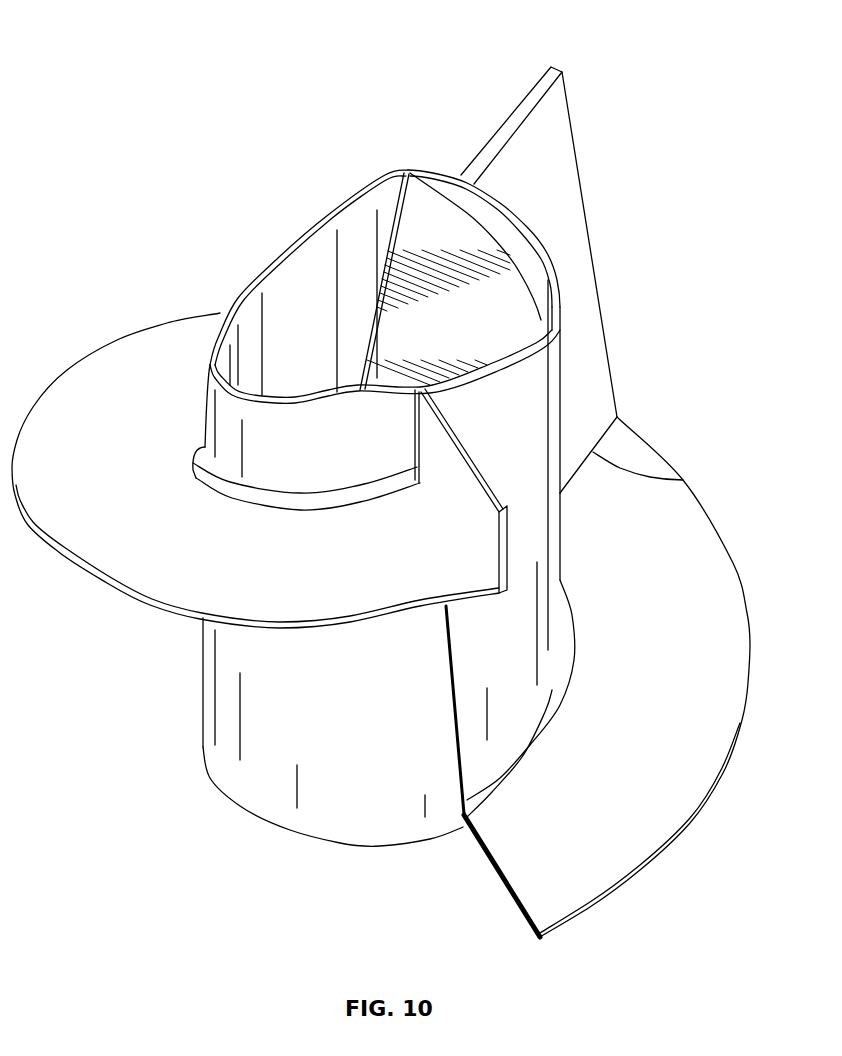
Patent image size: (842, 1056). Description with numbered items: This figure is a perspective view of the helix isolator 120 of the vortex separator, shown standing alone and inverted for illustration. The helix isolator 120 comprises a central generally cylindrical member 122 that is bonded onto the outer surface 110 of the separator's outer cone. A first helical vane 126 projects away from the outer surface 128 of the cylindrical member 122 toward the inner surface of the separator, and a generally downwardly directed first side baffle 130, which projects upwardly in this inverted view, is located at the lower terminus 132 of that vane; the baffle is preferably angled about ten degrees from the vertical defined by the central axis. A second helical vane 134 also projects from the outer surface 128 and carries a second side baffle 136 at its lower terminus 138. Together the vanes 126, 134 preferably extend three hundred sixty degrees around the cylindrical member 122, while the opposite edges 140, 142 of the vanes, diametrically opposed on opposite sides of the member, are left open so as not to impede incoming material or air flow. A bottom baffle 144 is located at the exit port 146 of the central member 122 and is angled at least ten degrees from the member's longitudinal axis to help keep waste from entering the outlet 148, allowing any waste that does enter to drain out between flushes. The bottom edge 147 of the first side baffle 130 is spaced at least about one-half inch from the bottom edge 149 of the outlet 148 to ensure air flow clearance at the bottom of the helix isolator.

The outer surface 110 is at (373, 775).
The helix isolator 120 is at (673, 395).
The central generally cylindrical member 122 is at (518, 623).
The first helical vane 126 is at (705, 565).
The outer surface 128 is at (512, 663).
The first side baffle 130 is at (563, 168).
The lower terminus 132 is at (687, 480).
The second helical vane 134 is at (140, 567).
The second side baffle 136 is at (460, 507).
The lower terminus 138 is at (467, 560).
The opposite edge 140 is at (518, 905).
The opposite edge 142 is at (213, 285).
The bottom baffle 144 is at (490, 334).
The exit port 146 is at (403, 134).
The bottom edge 147 is at (529, 93).
The outlet 148 is at (308, 257).
The bottom edge 149 is at (555, 253).